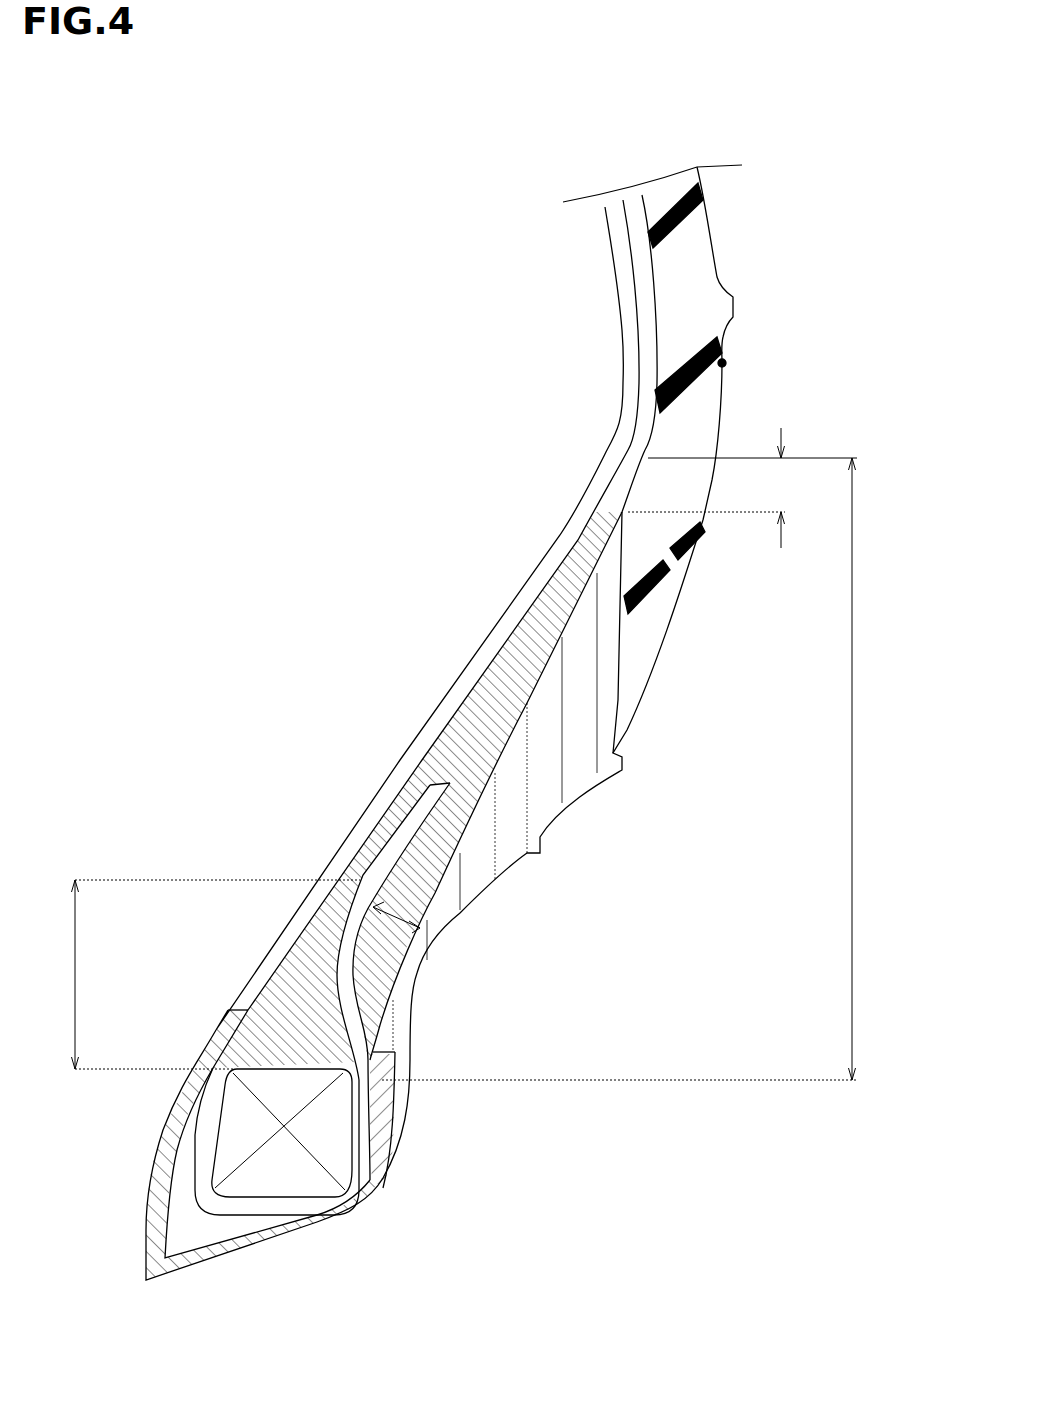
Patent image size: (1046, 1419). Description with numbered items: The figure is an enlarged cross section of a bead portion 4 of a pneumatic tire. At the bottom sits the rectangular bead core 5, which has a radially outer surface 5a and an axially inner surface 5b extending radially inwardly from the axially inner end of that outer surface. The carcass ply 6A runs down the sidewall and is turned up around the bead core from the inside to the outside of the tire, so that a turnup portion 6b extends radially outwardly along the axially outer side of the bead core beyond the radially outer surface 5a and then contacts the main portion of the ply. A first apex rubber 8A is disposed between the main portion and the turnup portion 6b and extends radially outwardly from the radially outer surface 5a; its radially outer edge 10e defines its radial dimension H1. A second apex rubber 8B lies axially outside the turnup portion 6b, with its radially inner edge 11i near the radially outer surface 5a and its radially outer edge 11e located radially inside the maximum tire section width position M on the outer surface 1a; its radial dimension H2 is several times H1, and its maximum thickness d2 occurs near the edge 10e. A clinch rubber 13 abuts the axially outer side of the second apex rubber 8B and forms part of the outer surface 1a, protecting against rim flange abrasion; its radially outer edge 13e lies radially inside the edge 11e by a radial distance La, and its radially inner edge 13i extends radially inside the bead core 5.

The outer surface of the tire 1a is at (715, 250).
The maximum tire section width position M is at (722, 363).
The radially outer edge of the second apex rubber 11e is at (650, 447).
The radially outer edge of the clinch rubber 13e is at (622, 515).
The carcass ply 6A is at (510, 648).
The second apex rubber 8B is at (478, 748).
The radially outer edge of the first apex rubber 10e is at (363, 887).
The clinch rubber 13 is at (533, 807).
The maximum thickness of the second apex rubber d2 is at (393, 917).
The first apex rubber 8A is at (307, 1023).
The radially outer surface of the bead core 5a is at (310, 1067).
The bead core 5 is at (237, 1138).
The axially inner surface of the bead core 5b is at (208, 1153).
The radially inner edge of the second apex rubber 11i is at (395, 1107).
The radially inner edge of the clinch rubber 13i is at (362, 1215).
The turnup portion of the carcass ply 6b is at (275, 1203).
The bead portion 4 is at (712, 883).
The radial distance between clinch rubber outer edge and second apex rubber outer ed La is at (742, 488).
The radial dimension of the first apex rubber H1 is at (197, 974).
The radial dimension of the second apex rubber H2 is at (640, 769).